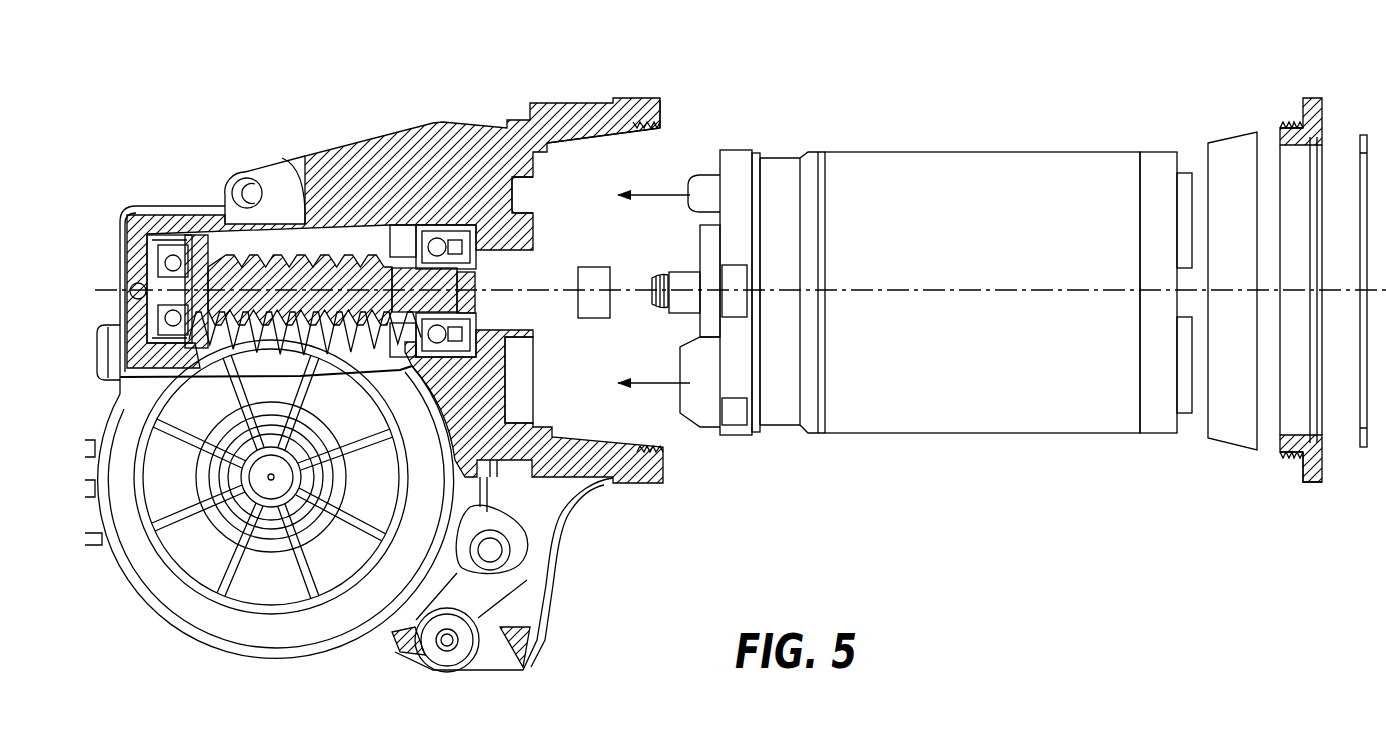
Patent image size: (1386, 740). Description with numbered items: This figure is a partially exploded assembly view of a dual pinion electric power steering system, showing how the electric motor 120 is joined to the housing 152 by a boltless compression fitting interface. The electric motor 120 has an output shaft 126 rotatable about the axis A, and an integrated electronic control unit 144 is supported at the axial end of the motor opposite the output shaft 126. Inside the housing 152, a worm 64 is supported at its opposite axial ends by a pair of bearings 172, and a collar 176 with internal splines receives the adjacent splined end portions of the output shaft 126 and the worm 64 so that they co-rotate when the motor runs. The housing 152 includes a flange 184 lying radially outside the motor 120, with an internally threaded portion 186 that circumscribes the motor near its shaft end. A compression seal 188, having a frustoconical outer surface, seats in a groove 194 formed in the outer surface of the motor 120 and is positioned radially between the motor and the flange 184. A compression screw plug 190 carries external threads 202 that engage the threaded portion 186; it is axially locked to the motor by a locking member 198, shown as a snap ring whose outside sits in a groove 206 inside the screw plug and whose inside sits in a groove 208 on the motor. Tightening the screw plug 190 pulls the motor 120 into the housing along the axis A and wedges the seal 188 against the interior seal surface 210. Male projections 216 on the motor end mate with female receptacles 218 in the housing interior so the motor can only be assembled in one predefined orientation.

The worm 64 is at (207, 270).
The electric motor 120 is at (1023, 163).
The output shaft 126 is at (662, 310).
The electronic control unit 144 is at (1158, 428).
The housing 152 is at (525, 600).
The bearings 172 is at (174, 256).
The collar 176 is at (597, 268).
The flange 184 is at (557, 95).
The threaded portion 186 is at (650, 133).
The compression seal 188 is at (1233, 146).
The compression screw plug 190 is at (1290, 104).
The groove 194 is at (787, 172).
The locking member 198 is at (1357, 430).
The external threads 202 is at (1285, 466).
The groove 206 is at (1293, 458).
The groove 208 is at (822, 433).
The interior seal surface 210 is at (600, 138).
The male projections 216 is at (695, 183).
The female receptacles 218 is at (525, 192).
The axis A is at (995, 288).